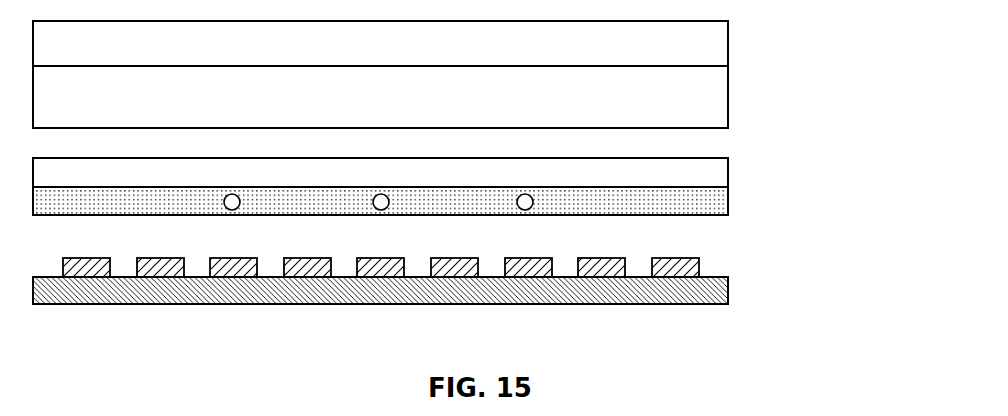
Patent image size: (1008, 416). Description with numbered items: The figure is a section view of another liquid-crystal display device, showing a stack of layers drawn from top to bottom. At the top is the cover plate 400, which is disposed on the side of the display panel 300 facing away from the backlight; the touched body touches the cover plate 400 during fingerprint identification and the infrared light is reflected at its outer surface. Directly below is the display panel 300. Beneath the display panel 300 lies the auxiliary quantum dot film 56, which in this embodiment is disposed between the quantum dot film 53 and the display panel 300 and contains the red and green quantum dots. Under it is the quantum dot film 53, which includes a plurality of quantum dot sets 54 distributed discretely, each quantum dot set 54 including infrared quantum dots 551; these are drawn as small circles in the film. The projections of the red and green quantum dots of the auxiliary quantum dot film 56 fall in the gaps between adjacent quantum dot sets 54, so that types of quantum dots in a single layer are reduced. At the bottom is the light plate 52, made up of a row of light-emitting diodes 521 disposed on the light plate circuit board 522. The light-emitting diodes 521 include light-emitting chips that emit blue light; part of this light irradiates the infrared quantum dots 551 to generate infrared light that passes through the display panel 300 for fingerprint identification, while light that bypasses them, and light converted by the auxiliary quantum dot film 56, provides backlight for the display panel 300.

The cover plate 400 is at (728, 42).
The display panel 300 is at (728, 99).
The auxiliary quantum dot film 56 is at (728, 183).
The quantum dot film 53 is at (728, 209).
The quantum dot set 54 is at (559, 229).
The infrared quantum dots 551 is at (533, 203).
The light plate 52 is at (454, 297).
The light-emitting diode 521 is at (699, 259).
The light plate circuit board 522 is at (812, 265).